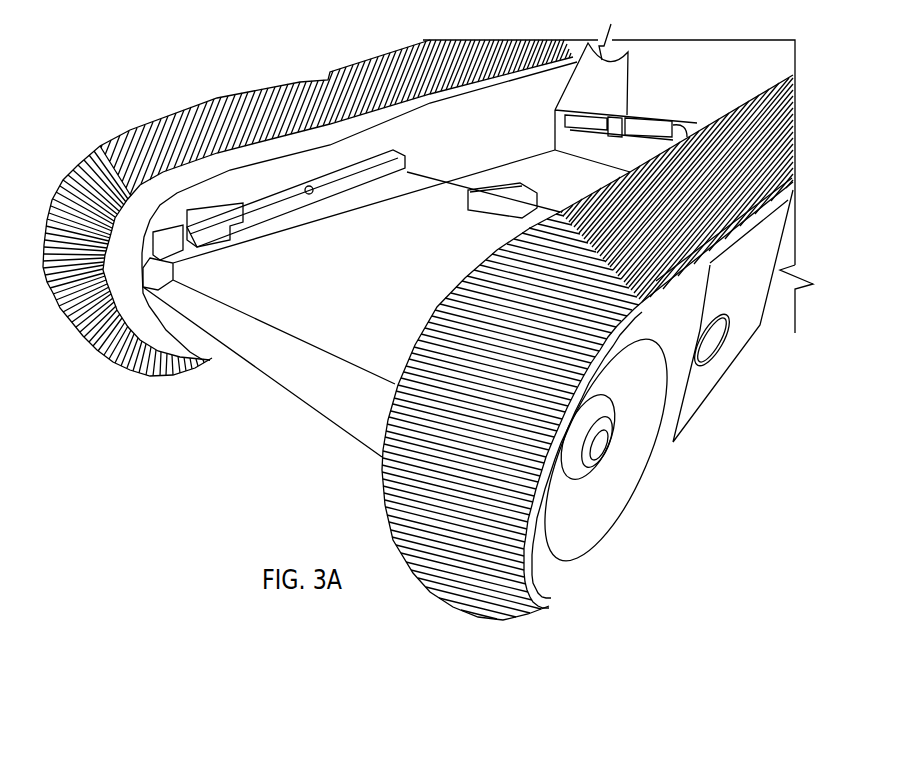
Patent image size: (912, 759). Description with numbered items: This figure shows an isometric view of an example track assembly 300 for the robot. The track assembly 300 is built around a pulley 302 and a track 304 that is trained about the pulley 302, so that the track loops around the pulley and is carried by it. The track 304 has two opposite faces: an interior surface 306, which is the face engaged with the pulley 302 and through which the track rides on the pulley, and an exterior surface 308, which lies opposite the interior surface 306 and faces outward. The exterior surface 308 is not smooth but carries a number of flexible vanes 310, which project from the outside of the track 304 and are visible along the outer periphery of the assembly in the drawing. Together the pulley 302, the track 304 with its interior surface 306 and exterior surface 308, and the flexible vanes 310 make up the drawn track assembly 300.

The track assembly 300 is at (437, 294).
The pulley 302 is at (579, 543).
The track 304 is at (411, 360).
The interior surface 306 is at (670, 289).
The exterior surface 308 is at (708, 264).
The flexible vanes 310 is at (508, 400).